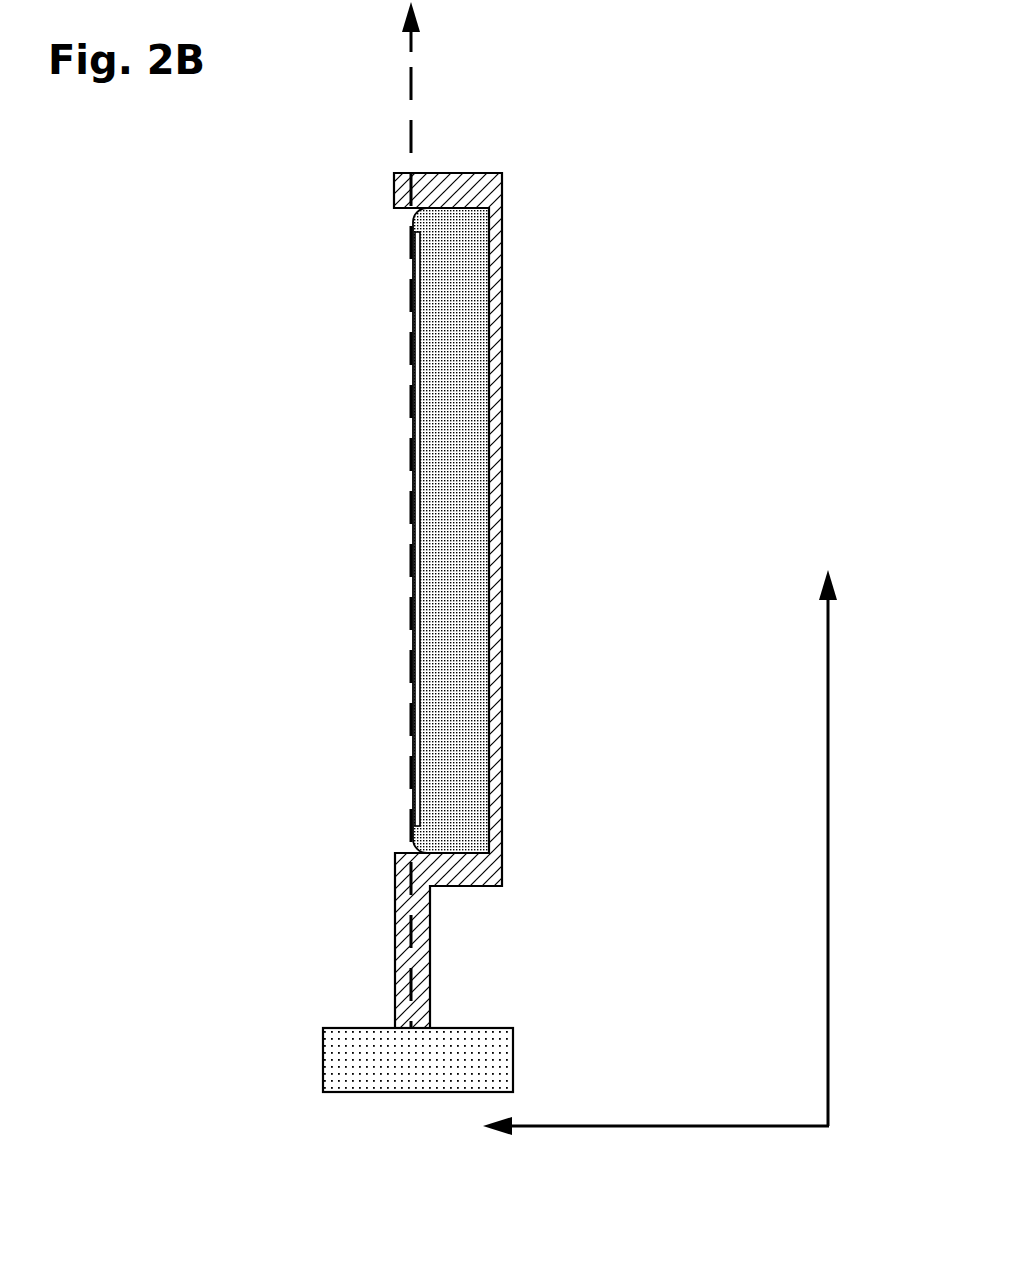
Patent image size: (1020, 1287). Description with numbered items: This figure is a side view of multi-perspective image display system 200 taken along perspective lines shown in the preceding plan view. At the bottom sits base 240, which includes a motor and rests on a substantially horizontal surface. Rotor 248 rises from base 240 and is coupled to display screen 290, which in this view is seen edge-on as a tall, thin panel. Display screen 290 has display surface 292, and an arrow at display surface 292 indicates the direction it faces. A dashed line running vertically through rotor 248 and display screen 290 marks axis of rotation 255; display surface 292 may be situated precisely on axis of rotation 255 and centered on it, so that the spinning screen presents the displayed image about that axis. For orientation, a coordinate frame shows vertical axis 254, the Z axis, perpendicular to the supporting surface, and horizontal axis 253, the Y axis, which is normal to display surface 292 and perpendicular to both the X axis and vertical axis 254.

The multi-perspective image display system 200 is at (790, 145).
The rotor 248 is at (431, 975).
The display screen 290 is at (451, 530).
The display surface 292 is at (424, 467).
The base 240 is at (514, 1063).
The axis of rotation 255 is at (410, 43).
The vertical axis 254 is at (830, 767).
The horizontal axis 253 is at (765, 1123).